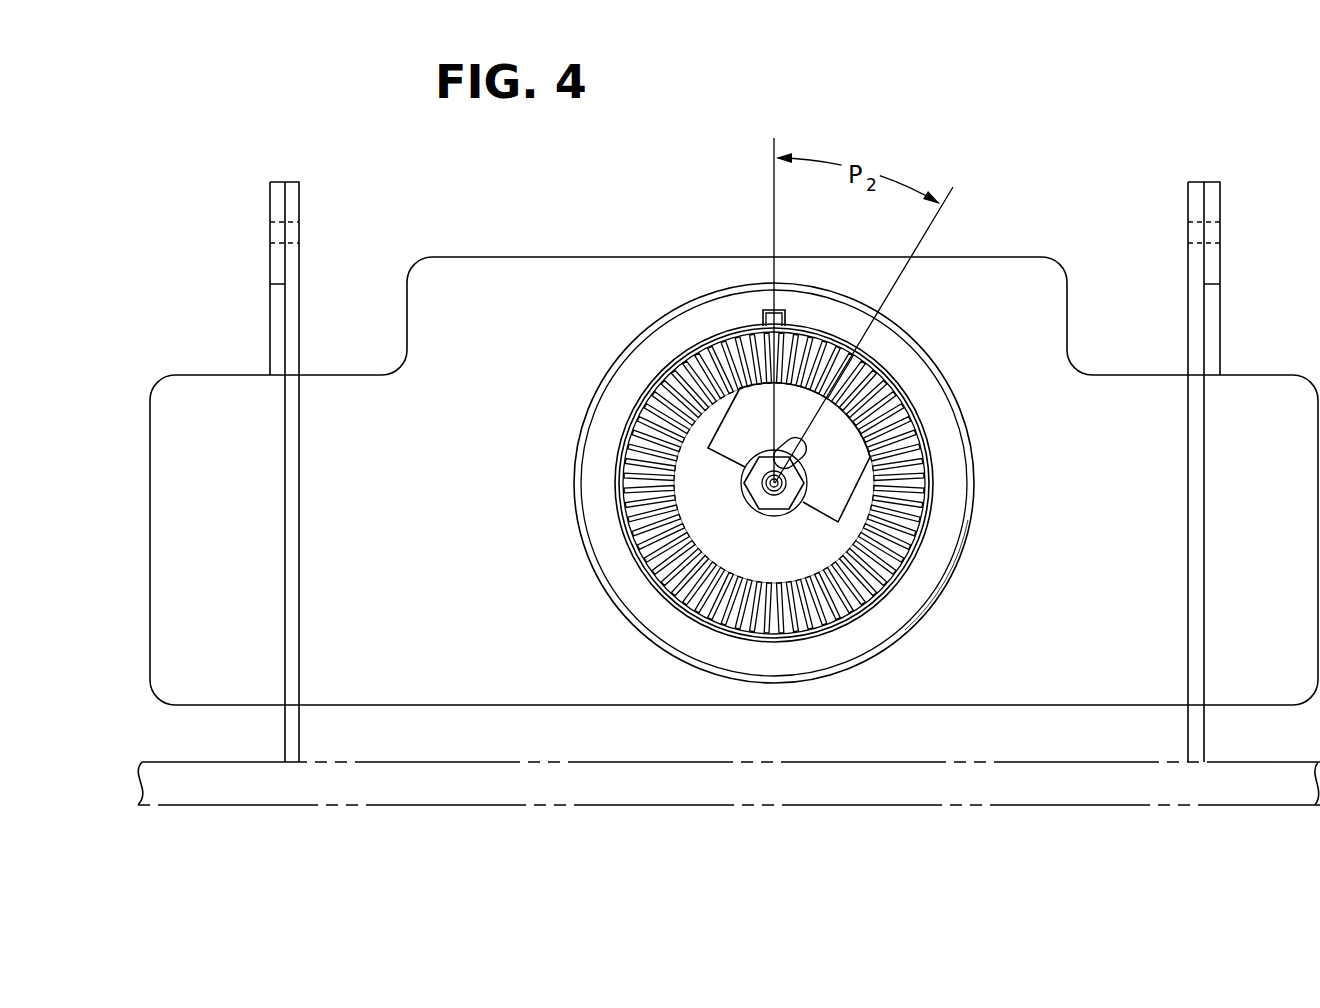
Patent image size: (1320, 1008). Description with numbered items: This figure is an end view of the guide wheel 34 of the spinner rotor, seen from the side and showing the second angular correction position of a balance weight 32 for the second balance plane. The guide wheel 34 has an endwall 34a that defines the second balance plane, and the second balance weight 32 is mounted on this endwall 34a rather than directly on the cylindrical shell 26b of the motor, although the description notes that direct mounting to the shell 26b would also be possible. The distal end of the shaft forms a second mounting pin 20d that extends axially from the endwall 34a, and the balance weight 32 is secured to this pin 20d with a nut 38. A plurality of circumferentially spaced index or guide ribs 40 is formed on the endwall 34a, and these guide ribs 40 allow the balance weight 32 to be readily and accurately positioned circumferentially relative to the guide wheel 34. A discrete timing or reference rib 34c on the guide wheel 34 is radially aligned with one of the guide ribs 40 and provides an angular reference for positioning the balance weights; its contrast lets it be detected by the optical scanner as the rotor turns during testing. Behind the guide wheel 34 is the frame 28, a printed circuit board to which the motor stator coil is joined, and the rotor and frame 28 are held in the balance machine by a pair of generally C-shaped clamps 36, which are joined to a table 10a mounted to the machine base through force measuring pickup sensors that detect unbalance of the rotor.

The table 10a is at (625, 806).
The second mounting pin 20d is at (765, 488).
The cylindrical shell 26b is at (900, 650).
The frame 28 is at (525, 256).
The balance weight 32 is at (812, 522).
The guide wheel 34 is at (628, 577).
The endwall 34a is at (697, 461).
The timing rib 34c is at (763, 318).
The clamps 36 is at (269, 200).
The nut 38 is at (768, 504).
The guide ribs 40 is at (914, 493).